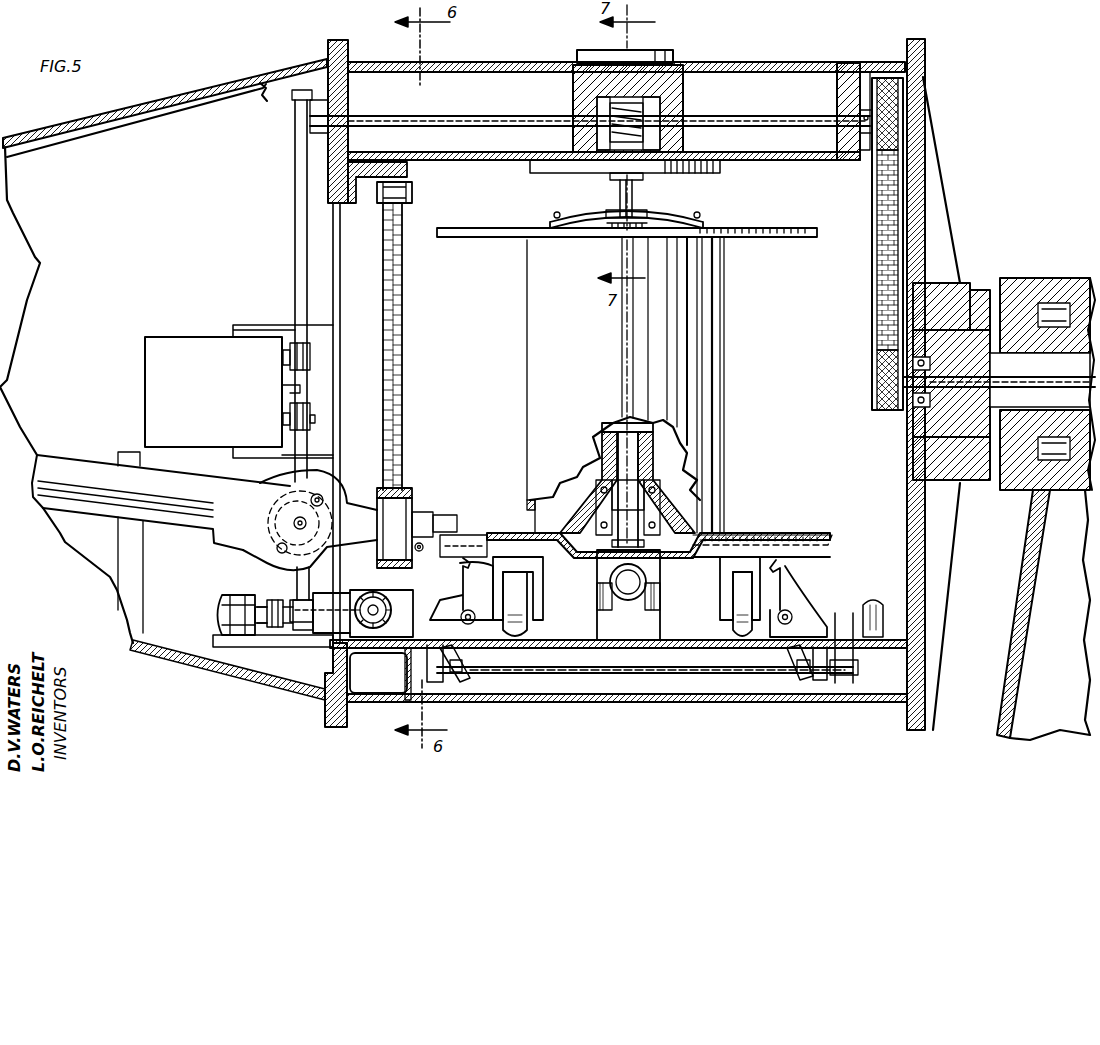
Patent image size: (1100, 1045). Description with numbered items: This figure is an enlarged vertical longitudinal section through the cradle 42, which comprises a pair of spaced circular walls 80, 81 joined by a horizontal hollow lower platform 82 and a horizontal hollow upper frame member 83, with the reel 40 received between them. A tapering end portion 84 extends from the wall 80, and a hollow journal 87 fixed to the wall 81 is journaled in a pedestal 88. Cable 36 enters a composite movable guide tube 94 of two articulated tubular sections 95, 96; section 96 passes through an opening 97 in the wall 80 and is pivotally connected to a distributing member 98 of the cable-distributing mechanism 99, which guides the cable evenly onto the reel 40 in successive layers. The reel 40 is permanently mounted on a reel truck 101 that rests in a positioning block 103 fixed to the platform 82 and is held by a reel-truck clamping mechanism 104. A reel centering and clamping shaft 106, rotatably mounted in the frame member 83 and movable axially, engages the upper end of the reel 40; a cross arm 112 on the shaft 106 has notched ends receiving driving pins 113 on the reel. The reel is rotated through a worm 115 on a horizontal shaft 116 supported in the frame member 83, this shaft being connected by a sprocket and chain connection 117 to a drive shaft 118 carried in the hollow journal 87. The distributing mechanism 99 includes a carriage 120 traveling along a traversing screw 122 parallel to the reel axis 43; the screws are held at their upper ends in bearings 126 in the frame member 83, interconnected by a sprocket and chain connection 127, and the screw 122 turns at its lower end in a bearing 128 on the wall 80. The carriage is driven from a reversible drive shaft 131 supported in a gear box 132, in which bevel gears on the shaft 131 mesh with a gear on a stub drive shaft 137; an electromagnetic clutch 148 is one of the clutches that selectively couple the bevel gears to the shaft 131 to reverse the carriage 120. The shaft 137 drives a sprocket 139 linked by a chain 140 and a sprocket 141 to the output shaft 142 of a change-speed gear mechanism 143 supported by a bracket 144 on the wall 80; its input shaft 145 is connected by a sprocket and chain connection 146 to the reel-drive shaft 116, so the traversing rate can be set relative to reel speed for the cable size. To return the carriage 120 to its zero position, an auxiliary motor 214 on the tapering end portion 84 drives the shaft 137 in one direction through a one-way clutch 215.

The cable 36 is at (440, 530).
The reel 40 is at (741, 308).
The cradle 42 is at (940, 69).
The axis of the reel 43 is at (625, 352).
The circular wall 80 is at (345, 157).
The circular wall 81 is at (925, 215).
The lower platform 82 is at (703, 648).
The upper frame member 83 is at (783, 60).
The tapering end portion 84 is at (178, 97).
The hollow journal 87 is at (1013, 323).
The pedestal 88 is at (1028, 590).
The composite movable guide tube 94 is at (77, 442).
The tubular section 95 is at (97, 498).
The tubular section 96 is at (358, 512).
The opening 97 is at (332, 215).
The distributing member 98 is at (413, 510).
The cable-distributing mechanism 99 is at (432, 442).
The reel truck 101 is at (733, 551).
The positioning block 103 is at (650, 624).
The reel-truck clamping mechanism 104 is at (802, 608).
The reel centering and clamping shaft 106 is at (622, 192).
The cross arm 112 is at (672, 222).
The driving pins 113 is at (700, 215).
The worm 115 is at (610, 100).
The horizontal shaft 116 is at (438, 115).
The sprocket and chain connection 117 is at (872, 207).
The drive shaft 118 is at (925, 407).
The carriage 120 is at (412, 490).
The traversing screw 122 is at (402, 335).
The bearings 126 is at (400, 172).
The sprocket and chain connection 127 is at (412, 196).
The bearing 128 is at (413, 586).
The reversible drive shaft 131 is at (283, 613).
The gear box 132 is at (413, 600).
The stub drive shaft 137 is at (330, 650).
The sprocket 139 is at (292, 628).
The chain 140 is at (297, 468).
The sprocket 141 is at (295, 395).
The output shaft 142 is at (290, 420).
The change-speed gear mechanism 143 is at (195, 337).
The bracket 144 is at (277, 325).
The input shaft 145 is at (285, 365).
The sprocket and chain connection 146 is at (292, 217).
The electromagnetic clutch 148 is at (403, 637).
The motor 214 is at (223, 592).
The one-way clutch 215 is at (277, 633).